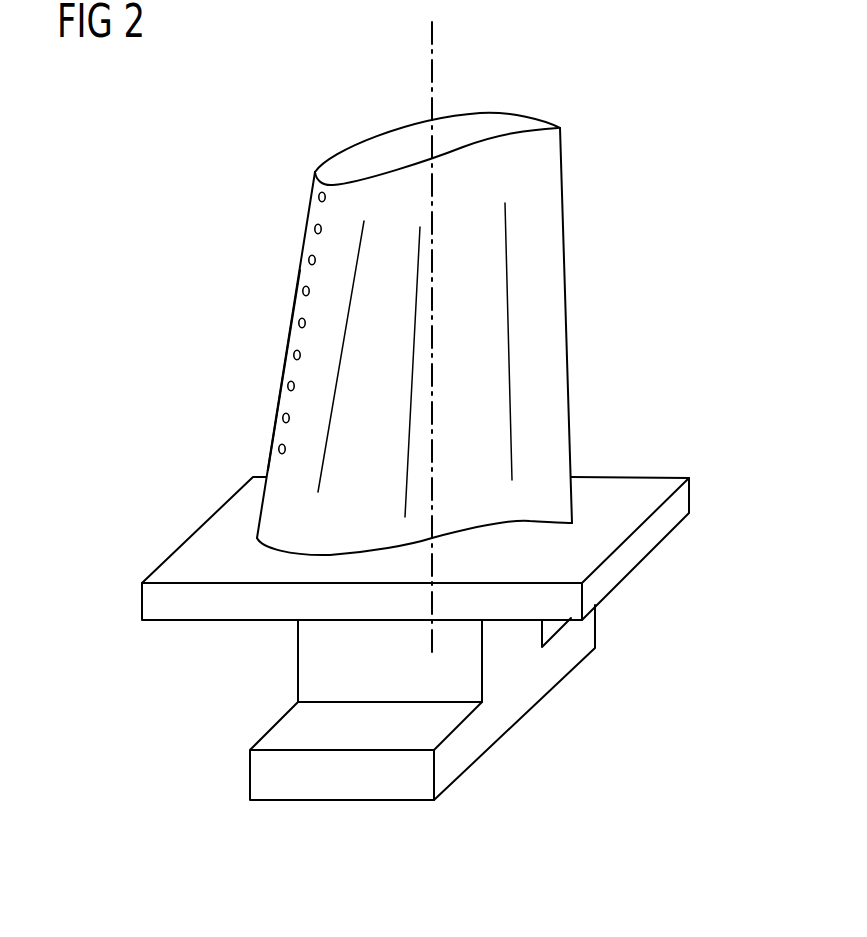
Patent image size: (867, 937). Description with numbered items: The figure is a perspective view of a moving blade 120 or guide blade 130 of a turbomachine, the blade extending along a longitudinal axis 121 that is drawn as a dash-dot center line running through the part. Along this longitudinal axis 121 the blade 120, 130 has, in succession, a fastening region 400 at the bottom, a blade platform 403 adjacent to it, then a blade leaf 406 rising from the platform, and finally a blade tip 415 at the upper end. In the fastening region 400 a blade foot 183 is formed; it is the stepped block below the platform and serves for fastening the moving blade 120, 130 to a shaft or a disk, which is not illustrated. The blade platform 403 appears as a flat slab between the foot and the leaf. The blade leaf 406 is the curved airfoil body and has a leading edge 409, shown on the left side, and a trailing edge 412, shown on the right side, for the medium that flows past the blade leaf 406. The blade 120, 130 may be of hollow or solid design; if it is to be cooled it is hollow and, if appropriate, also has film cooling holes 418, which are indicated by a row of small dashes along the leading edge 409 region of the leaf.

The longitudinal axis 121 is at (433, 42).
The blade tip 415 is at (370, 150).
The trailing edge 412 is at (580, 294).
The leading edge 409 is at (286, 271).
The blade leaf 406 is at (313, 375).
The film cooling holes 418 is at (318, 198).
The moving blade 120 is at (360, 317).
The guide blade 130 is at (360, 317).
The blade platform 403 is at (648, 542).
The fastening region 400 is at (411, 702).
The blade foot 183 is at (285, 732).